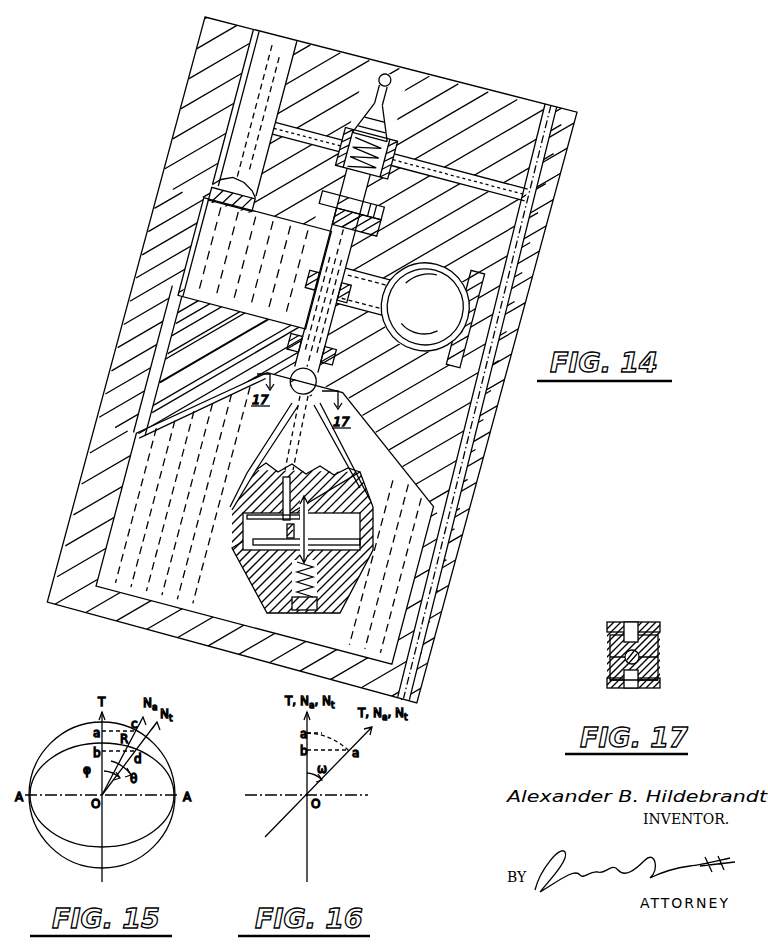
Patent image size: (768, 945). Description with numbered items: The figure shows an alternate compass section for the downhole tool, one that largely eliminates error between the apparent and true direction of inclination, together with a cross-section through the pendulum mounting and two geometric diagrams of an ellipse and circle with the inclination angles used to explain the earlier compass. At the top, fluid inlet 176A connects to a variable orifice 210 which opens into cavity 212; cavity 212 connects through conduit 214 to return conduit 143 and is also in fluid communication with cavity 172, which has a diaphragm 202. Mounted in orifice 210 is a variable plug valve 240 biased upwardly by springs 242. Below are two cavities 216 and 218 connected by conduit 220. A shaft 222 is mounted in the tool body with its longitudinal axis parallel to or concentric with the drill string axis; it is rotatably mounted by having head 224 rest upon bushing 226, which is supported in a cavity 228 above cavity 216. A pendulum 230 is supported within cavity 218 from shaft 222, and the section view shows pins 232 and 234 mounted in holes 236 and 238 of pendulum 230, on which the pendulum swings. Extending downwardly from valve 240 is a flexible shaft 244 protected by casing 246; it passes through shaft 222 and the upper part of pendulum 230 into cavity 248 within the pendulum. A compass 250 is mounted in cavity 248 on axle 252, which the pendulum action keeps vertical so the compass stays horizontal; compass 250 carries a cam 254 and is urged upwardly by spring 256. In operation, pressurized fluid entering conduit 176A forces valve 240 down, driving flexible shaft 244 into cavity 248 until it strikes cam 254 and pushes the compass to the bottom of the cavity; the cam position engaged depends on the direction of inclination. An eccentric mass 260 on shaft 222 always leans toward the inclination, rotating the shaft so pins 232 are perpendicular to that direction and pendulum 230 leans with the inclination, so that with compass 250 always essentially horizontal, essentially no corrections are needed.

In FIG. 14, the return conduit 143 is at (565, 114).
In FIG. 14, the cavity 172 is at (248, 113).
In FIG. 14, the diaphragm 202 is at (228, 182).
In FIG. 14, the fluid inlet 176A is at (387, 76).
In FIG. 14, the variable plug valve 240 is at (390, 110).
In FIG. 14, the variable orifice 210 is at (357, 122).
In FIG. 14, the cavity 212 is at (395, 138).
In FIG. 14, the springs 242 is at (343, 165).
In FIG. 14, the conduit 214 is at (443, 168).
In FIG. 14, the head 224 is at (327, 203).
In FIG. 14, the cavity 228 is at (377, 203).
In FIG. 14, the bushing 226 is at (380, 229).
In FIG. 14, the cavity 216 is at (300, 262).
In FIG. 14, the shaft 222 is at (307, 325).
In FIG. 17, the shaft 222 is at (658, 644).
In FIG. 14, the eccentric mass 260 is at (447, 314).
In FIG. 14, the conduit 220 is at (167, 337).
In FIG. 14, the cavity 218 is at (330, 637).
In FIG. 14, the pendulum 230 is at (270, 447).
In FIG. 17, the pendulum 230 is at (660, 684).
In FIG. 14, the casing 246 is at (295, 432).
In FIG. 17, the casing 246 is at (660, 657).
In FIG. 14, the cavity 248 is at (350, 528).
In FIG. 14, the flexible shaft 244 is at (287, 500).
In FIG. 17, the flexible shaft 244 is at (625, 657).
In FIG. 14, the axle 252 is at (287, 518).
In FIG. 14, the cam 254 is at (287, 528).
In FIG. 14, the compass 250 is at (257, 542).
In FIG. 14, the spring 256 is at (293, 578).
In FIG. 17, the pin 232 is at (628, 622).
In FIG. 17, the hole 236 is at (612, 639).
In FIG. 17, the hole 238 is at (612, 677).
In FIG. 17, the pin 234 is at (633, 688).